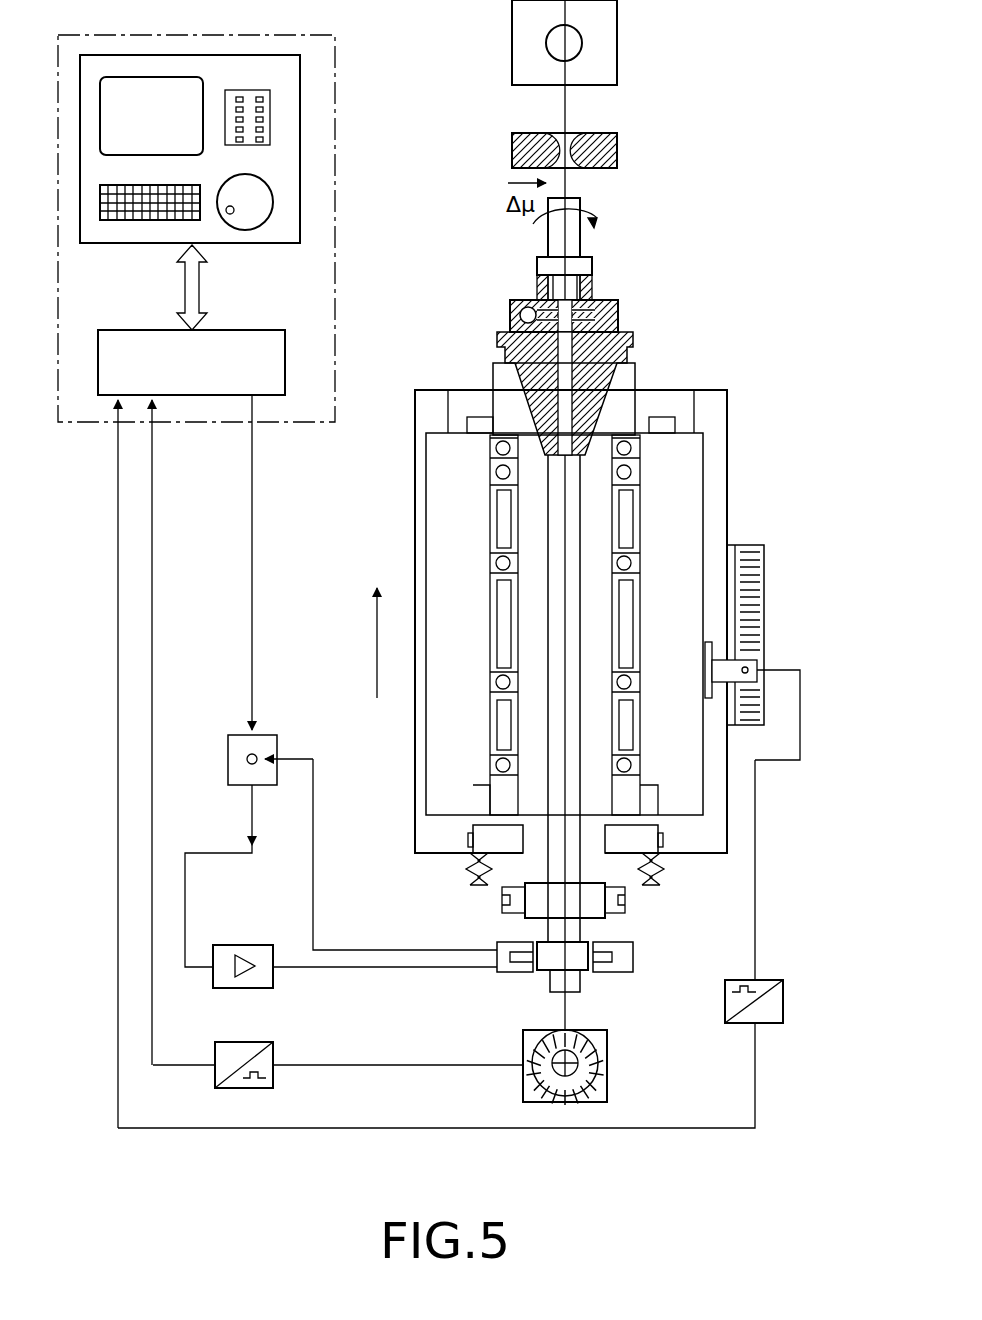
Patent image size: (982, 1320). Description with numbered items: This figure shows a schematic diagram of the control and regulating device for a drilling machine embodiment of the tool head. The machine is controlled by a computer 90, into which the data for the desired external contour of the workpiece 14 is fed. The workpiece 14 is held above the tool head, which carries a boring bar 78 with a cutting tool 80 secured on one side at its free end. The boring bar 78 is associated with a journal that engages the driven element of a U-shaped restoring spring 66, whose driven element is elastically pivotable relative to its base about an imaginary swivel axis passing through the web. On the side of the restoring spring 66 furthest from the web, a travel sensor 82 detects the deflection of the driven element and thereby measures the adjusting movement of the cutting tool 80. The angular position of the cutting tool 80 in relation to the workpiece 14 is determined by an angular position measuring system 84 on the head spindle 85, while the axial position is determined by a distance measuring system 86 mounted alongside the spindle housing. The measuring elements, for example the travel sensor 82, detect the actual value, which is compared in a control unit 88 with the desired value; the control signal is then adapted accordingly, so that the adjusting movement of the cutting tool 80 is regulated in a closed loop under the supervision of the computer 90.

The computer 90 is at (322, 53).
The workpiece 14 is at (607, 143).
The cutting tool 80 is at (580, 197).
The boring bar 78 is at (572, 247).
The restoring spring 66 is at (608, 298).
The travel sensor 82 is at (617, 315).
The head spindle 85 is at (580, 762).
The distance measuring system 86 is at (752, 620).
The control unit 88 is at (247, 759).
The angular position measuring system 84 is at (600, 1083).